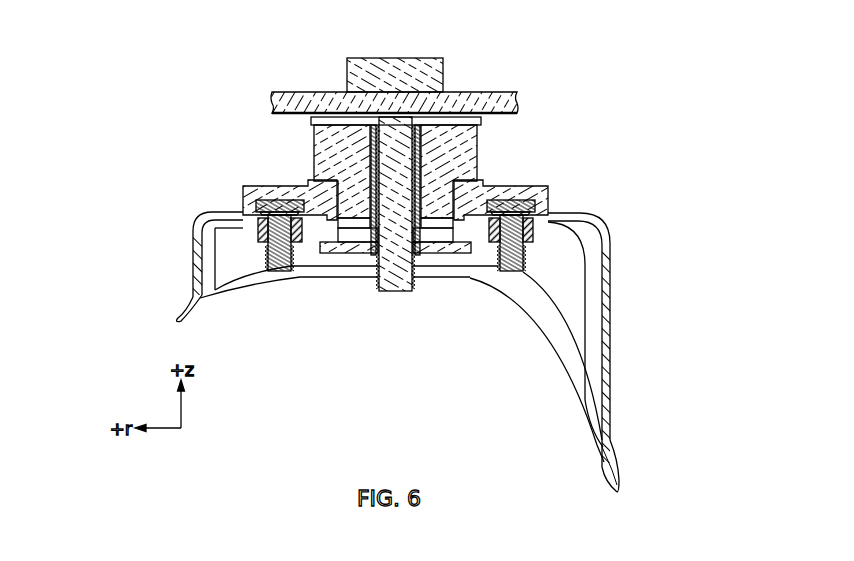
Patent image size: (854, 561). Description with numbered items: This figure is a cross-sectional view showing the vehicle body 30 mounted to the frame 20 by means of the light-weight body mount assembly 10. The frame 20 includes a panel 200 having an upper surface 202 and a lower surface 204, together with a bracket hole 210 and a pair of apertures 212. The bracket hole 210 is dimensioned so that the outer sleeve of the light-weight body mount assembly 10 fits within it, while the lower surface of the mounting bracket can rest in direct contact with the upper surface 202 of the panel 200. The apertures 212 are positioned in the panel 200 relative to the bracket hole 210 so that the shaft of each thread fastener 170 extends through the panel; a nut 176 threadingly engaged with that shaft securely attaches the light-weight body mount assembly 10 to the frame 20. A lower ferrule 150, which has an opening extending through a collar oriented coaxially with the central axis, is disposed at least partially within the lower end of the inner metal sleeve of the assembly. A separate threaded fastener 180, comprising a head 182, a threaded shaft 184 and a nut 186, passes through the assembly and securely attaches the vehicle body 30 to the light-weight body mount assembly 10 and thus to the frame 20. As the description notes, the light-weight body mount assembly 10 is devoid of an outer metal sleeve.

The light-weight body mount assembly 10 is at (482, 148).
The frame 20 is at (620, 320).
The vehicle body 30 is at (500, 90).
The lower ferrule 150 is at (444, 262).
The thread fastener 170 is at (280, 275).
The nut 176 is at (262, 240).
The threaded fastener 180 is at (395, 297).
The head 182 is at (385, 157).
The threaded shaft 184 is at (355, 75).
The nut 186 is at (372, 268).
The panel 200 is at (572, 207).
The upper surface 202 is at (585, 213).
The lower surface 204 is at (586, 258).
The bracket hole 210 is at (474, 240).
The apertures 212 is at (266, 212).